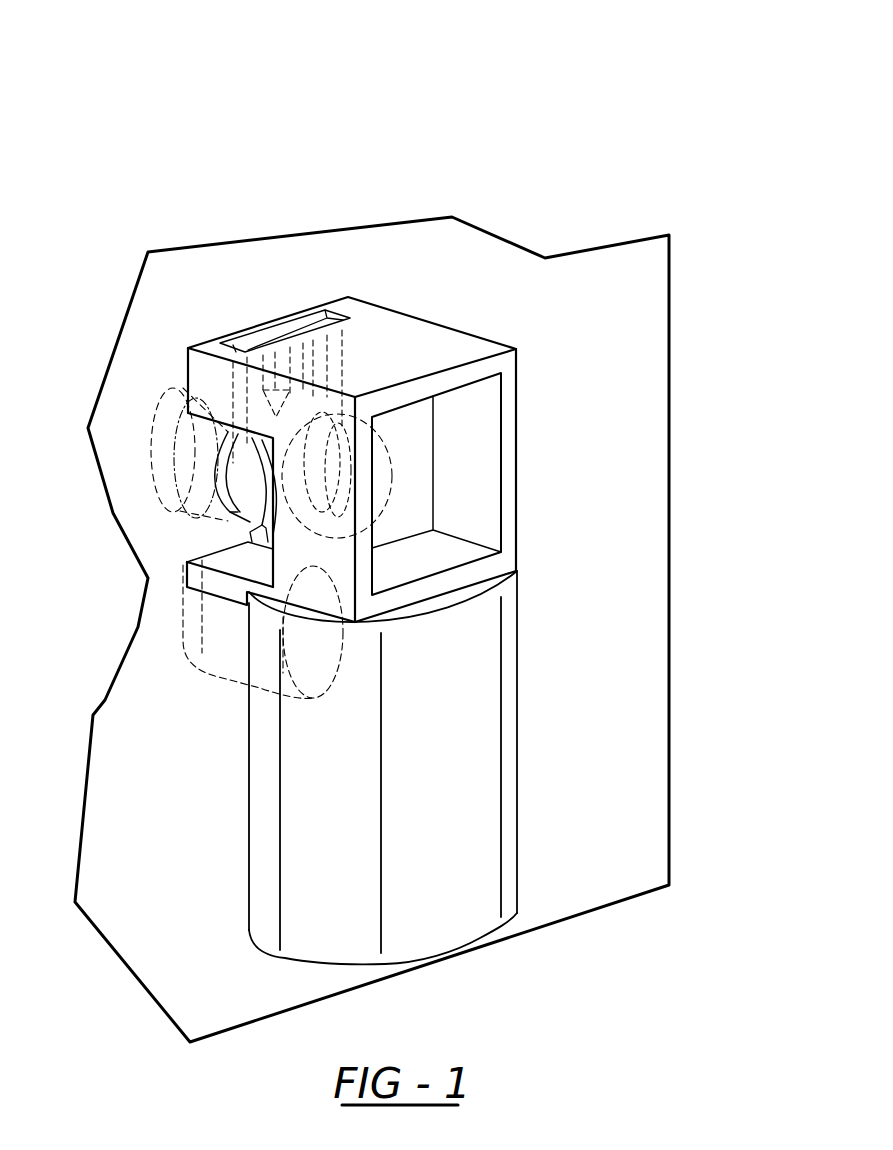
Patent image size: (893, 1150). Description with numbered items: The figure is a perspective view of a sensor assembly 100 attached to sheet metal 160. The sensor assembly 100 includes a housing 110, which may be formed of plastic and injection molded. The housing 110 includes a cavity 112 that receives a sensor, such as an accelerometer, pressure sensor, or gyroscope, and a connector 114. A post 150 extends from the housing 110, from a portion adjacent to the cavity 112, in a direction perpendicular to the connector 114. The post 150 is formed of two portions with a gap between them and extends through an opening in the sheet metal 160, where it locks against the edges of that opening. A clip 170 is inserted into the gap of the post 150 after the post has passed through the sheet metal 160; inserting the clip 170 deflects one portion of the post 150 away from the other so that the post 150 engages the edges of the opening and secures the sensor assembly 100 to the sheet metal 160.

The sensor assembly 100 is at (562, 139).
The housing 110 is at (408, 340).
The cavity 112 is at (472, 448).
The connector 114 is at (467, 722).
The post 150 is at (175, 427).
The sheet metal 160 is at (637, 327).
The clip 170 is at (278, 337).